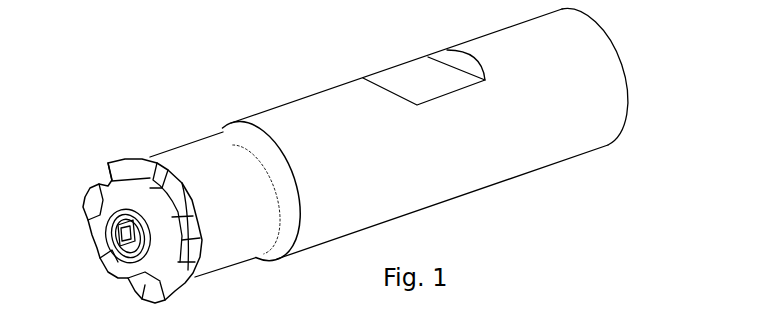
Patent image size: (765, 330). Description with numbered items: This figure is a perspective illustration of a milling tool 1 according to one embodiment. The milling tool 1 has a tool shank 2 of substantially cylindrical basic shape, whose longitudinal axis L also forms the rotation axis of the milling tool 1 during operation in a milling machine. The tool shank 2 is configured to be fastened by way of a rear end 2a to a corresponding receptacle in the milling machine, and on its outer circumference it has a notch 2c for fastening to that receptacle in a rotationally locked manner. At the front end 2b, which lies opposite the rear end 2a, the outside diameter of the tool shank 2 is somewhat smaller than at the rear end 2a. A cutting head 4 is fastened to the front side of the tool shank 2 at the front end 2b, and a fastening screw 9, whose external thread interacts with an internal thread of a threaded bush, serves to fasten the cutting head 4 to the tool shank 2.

The milling tool 1 is at (244, 58).
The tool shank 2 is at (500, 152).
The rear end 2a is at (622, 62).
The front end 2b is at (172, 160).
The notch 2c is at (407, 87).
The cutting head 4 is at (132, 188).
The fastening screw 9 is at (133, 248).